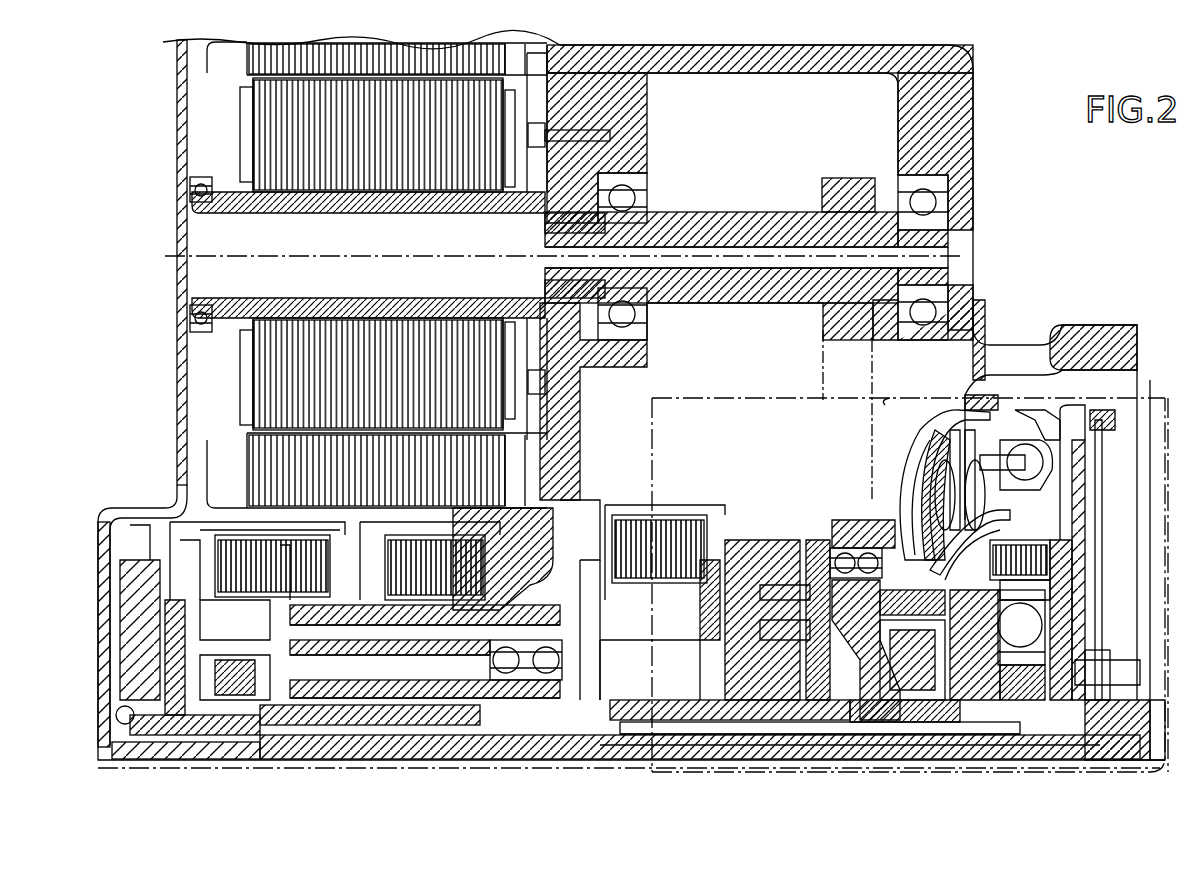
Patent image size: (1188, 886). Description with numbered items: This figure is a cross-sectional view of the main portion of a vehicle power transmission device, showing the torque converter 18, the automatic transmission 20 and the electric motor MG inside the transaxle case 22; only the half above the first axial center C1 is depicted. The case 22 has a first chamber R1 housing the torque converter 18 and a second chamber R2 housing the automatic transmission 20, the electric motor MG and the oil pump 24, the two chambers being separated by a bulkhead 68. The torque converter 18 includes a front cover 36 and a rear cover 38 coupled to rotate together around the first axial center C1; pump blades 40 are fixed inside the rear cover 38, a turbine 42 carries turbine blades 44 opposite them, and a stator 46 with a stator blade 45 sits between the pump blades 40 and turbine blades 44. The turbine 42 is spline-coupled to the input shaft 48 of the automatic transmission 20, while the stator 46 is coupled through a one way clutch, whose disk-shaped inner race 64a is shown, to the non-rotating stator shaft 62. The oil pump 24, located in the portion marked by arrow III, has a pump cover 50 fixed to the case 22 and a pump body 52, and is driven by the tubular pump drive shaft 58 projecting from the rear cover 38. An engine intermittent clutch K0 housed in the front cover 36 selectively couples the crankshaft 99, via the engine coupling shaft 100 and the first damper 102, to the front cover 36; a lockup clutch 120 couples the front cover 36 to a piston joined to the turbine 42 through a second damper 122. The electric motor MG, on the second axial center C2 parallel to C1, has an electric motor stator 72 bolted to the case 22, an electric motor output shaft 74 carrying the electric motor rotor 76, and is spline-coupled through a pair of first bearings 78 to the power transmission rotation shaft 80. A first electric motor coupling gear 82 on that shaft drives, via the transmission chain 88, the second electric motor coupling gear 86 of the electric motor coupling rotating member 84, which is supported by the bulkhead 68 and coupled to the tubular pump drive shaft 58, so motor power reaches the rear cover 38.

The electric motor MG is at (374, 275).
The second chamber R2 is at (880, 105).
The first chamber R1 is at (1063, 345).
The transaxle case 22 is at (180, 385).
The first bearings 78 is at (624, 196).
The first electric motor coupling gear 82 is at (848, 182).
The power transmission rotation shaft 80 is at (710, 217).
The second axial center C2 is at (761, 240).
The first axial center C1 is at (590, 770).
The electric motor output shaft 74 is at (272, 300).
The electric motor rotor 76 is at (262, 371).
The electric motor stator 72 is at (250, 438).
The transmission chain 88 is at (822, 356).
The arrow III is at (692, 398).
The torque converter 18 is at (998, 400).
The rear cover 38 is at (922, 432).
The pump blades 40 is at (905, 460).
The turbine blades 44 is at (998, 490).
The second damper 122 is at (1018, 420).
The lockup clutch 120 is at (1085, 450).
The front cover 36 is at (1078, 508).
The stator blade 45 is at (960, 540).
The engine intermittent clutch K0 is at (1052, 545).
The bulkhead 68 is at (880, 417).
The automatic transmission 20 is at (600, 500).
The pump cover 50 is at (750, 510).
The pump body 52 is at (770, 565).
The oil pump 24 is at (790, 520).
The electric motor coupling rotating member 84 is at (808, 525).
The second electric motor coupling gear 86 is at (848, 515).
The first damper 102 is at (1072, 600).
The stator 46 is at (942, 598).
The stator shaft 62 is at (778, 742).
The input shaft 48 is at (828, 742).
The tubular pump drive shaft 58 is at (886, 742).
The turbine 42 is at (910, 742).
The inner race 64a is at (950, 742).
The engine coupling shaft 100 is at (1097, 755).
The crankshaft 99 is at (1136, 755).